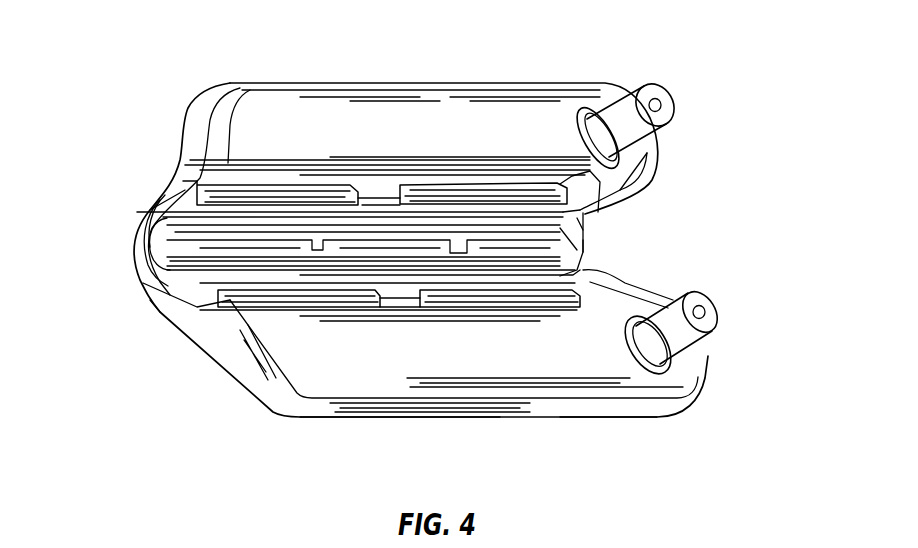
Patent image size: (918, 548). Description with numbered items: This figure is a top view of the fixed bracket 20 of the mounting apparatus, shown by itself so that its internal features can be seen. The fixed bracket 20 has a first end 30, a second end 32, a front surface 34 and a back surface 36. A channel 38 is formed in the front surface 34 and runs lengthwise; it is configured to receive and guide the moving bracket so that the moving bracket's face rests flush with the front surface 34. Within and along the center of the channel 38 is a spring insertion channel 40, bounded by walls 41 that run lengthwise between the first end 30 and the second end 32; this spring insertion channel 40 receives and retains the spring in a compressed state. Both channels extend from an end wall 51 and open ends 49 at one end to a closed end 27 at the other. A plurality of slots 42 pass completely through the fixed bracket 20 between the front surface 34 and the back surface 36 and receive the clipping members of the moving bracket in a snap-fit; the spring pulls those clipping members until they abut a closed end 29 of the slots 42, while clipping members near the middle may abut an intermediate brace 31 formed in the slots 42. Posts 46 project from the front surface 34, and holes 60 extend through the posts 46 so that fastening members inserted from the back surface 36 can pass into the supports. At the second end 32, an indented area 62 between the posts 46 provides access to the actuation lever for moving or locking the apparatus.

The fixed bracket 20 is at (390, 417).
The closed end 27 is at (580, 245).
The closed end of the slots 29 is at (580, 300).
The first end 30 is at (166, 314).
The intermediate brace 31 is at (375, 205).
The second end 32 is at (680, 206).
The front surface 34 is at (490, 113).
The back surface 36 is at (623, 418).
The channel 38 is at (170, 277).
The spring insertion channel 40 is at (173, 257).
The walls 41 is at (150, 300).
The slots 42 is at (262, 200).
The posts 46 is at (653, 84).
The open ends 49 is at (157, 200).
The end wall 51 is at (150, 247).
The holes 60 is at (657, 105).
The indented area 62 is at (632, 240).